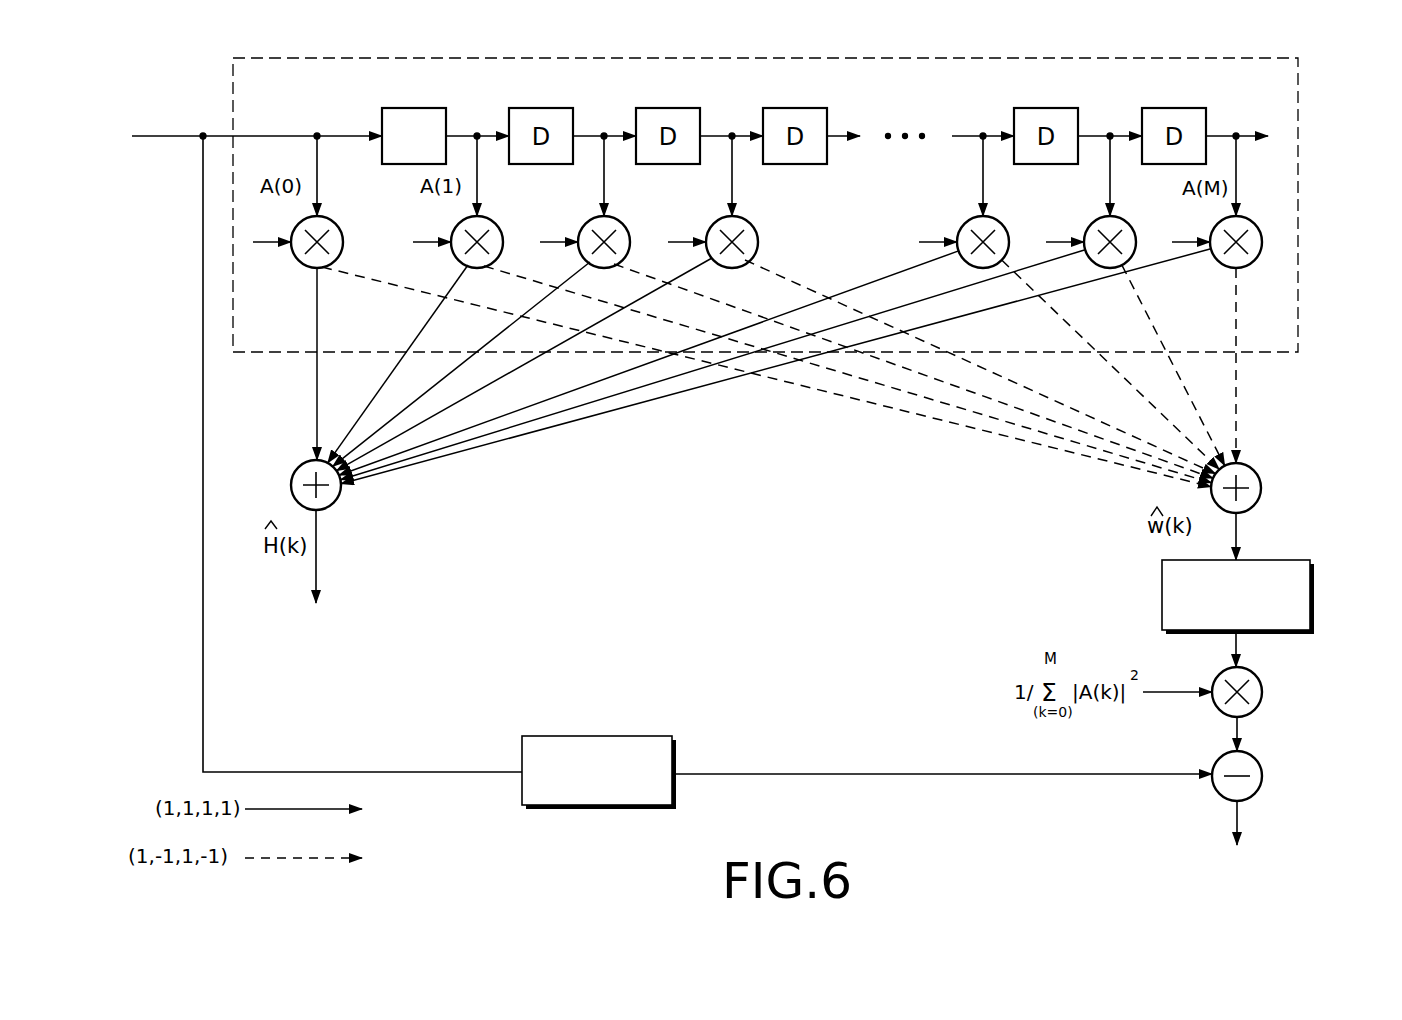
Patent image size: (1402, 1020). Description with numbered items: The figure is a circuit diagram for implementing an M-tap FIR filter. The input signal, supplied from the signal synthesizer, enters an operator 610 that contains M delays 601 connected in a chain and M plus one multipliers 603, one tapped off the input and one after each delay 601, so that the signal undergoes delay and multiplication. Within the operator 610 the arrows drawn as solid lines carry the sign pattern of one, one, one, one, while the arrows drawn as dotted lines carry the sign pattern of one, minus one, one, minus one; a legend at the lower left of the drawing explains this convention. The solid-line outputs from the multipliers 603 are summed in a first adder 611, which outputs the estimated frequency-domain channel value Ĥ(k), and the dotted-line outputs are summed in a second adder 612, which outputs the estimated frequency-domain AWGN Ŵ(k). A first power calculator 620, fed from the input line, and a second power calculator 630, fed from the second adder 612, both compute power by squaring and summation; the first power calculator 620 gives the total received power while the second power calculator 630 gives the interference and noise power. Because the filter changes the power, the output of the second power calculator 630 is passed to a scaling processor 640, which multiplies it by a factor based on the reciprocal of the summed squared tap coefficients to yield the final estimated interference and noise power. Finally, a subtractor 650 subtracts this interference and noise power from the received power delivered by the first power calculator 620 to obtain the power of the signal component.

The operator 610 is at (800, 58).
The delay 601 is at (420, 108).
The multiplier 603 is at (338, 228).
The first adder 611 is at (291, 485).
The second adder 612 is at (1261, 488).
The first power calculator 620 is at (597, 736).
The second power calculator 630 is at (1314, 600).
The scaling processor 640 is at (1262, 692).
The subtractor 650 is at (1262, 776).